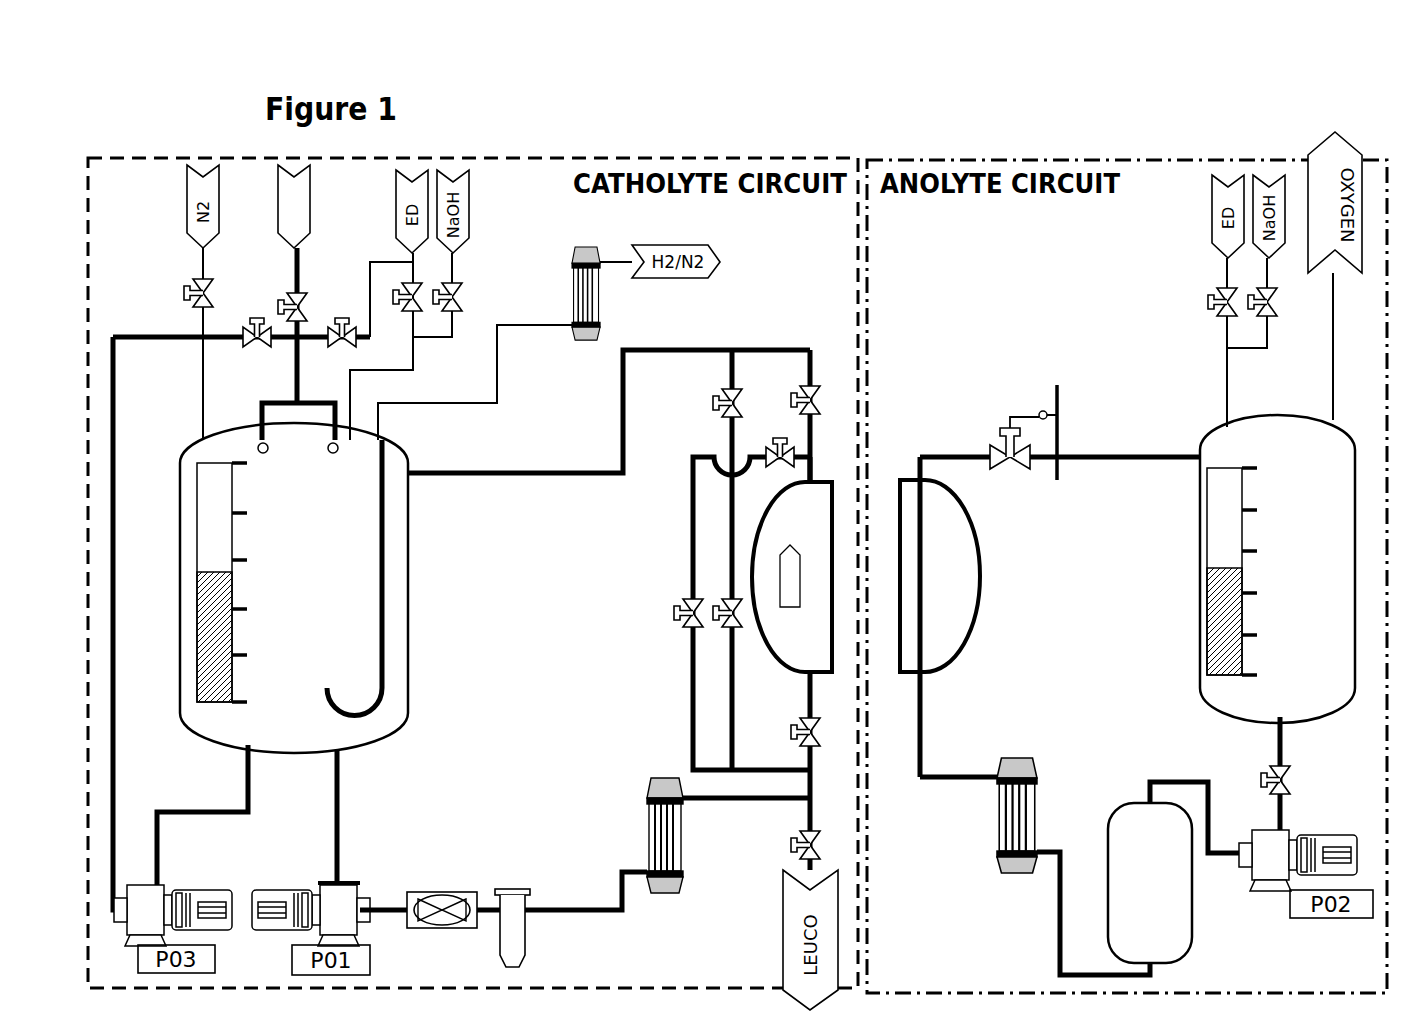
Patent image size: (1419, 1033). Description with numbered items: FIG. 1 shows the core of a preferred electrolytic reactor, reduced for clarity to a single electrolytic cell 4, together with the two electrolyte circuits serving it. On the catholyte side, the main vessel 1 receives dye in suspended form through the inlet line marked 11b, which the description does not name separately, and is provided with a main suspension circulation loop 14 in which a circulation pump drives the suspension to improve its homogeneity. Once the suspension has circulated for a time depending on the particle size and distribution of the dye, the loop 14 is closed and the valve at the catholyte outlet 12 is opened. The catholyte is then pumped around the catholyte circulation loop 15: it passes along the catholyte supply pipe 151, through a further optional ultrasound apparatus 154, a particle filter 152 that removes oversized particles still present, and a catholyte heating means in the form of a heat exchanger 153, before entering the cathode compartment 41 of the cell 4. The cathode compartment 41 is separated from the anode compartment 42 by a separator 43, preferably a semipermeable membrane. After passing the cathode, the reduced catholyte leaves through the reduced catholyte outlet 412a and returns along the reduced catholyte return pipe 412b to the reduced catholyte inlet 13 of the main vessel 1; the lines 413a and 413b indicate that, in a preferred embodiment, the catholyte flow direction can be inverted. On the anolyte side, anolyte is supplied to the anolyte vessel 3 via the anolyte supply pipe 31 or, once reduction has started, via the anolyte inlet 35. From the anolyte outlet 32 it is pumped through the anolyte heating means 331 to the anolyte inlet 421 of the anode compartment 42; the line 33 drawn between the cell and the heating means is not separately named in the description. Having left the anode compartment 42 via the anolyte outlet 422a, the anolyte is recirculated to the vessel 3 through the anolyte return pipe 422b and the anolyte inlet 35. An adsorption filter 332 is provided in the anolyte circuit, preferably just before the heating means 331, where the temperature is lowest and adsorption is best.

The main vessel 1 is at (350, 608).
The anolyte vessel 3 is at (1340, 495).
The electrolytic cell 4 is at (866, 555).
The dye inlet 11b is at (300, 268).
The catholyte outlet 12 is at (338, 763).
The reduced catholyte inlet 13 is at (382, 655).
The main suspension circulation loop 14 is at (190, 810).
The catholyte circulation loop 15 is at (533, 473).
The anolyte supply pipe 31 is at (1230, 395).
The anolyte outlet 32 is at (1283, 725).
The anolyte pipe to heat exchanger 33 is at (970, 777).
The anolyte inlet 35 is at (1197, 463).
The cathode compartment 41 is at (792, 577).
The anode compartment 42 is at (940, 576).
The separator 43 is at (832, 623).
The catholyte supply pipe 151 is at (607, 908).
The particle filter 152 is at (513, 913).
The catholyte heating means 153 is at (668, 850).
The ultrasound apparatus 154 is at (440, 903).
The anolyte heating means 331 is at (1025, 812).
The adsorption filter 332 is at (1173, 872).
The reduced catholyte outlet 412a is at (853, 460).
The reduced catholyte return pipe 412b is at (730, 333).
The catholyte flow inversion line 413a is at (693, 552).
The catholyte flow inversion line 413b is at (737, 680).
The anolyte inlet 421 is at (922, 672).
The anolyte outlet 422a is at (925, 475).
The anolyte return pipe 422b is at (1103, 455).